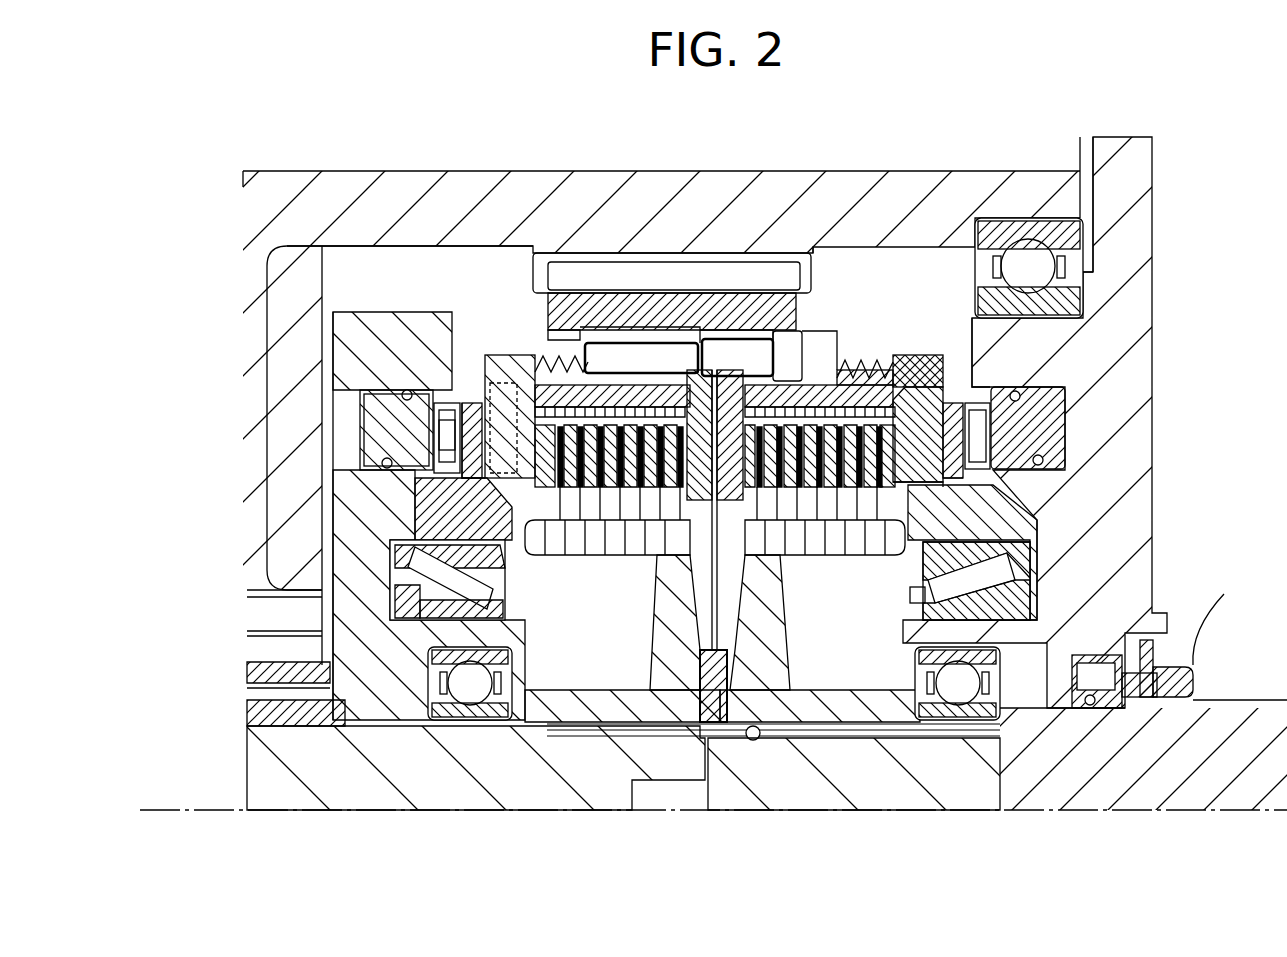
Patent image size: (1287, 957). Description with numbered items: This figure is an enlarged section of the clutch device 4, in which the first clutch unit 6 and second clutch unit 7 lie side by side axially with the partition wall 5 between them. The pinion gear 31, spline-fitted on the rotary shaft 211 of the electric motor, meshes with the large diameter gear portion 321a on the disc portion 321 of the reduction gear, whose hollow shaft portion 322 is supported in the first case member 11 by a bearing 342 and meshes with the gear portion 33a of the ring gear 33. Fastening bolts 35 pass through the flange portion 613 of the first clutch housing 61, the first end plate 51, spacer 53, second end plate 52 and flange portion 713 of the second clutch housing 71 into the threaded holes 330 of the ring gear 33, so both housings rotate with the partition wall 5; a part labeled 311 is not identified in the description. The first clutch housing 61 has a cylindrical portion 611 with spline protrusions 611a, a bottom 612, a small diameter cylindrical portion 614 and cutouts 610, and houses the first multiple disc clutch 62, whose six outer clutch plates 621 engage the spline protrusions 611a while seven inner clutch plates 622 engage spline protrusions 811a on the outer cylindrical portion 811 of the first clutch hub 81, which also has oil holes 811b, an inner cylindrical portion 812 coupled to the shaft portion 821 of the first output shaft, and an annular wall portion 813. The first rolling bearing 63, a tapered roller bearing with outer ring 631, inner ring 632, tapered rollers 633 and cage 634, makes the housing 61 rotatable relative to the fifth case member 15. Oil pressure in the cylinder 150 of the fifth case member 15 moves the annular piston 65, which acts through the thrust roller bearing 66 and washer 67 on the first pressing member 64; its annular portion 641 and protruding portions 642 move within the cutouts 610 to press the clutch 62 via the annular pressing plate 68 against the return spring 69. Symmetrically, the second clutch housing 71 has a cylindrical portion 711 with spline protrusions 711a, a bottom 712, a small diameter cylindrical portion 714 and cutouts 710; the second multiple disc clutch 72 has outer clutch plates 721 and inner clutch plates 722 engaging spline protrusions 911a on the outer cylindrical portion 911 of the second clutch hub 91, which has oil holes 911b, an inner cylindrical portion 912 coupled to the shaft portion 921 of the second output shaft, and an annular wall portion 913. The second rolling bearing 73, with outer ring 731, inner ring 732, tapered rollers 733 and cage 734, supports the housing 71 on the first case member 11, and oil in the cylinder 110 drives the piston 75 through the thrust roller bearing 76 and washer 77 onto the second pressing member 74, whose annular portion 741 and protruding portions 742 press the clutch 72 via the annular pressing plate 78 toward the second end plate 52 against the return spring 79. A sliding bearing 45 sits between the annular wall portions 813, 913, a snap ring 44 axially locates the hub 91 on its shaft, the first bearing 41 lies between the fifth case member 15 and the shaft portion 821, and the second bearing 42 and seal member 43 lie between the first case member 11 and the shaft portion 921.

The clutch device 4 is at (260, 176).
The partition wall 5 is at (698, 232).
The first clutch unit 6 is at (418, 260).
The second clutch unit 7 is at (945, 270).
The first case member 11 is at (1150, 240).
The fifth case member 15 is at (420, 370).
The cylindrical pinion gear 31 is at (263, 675).
The ring gear 33 is at (713, 217).
The gear portion 33a is at (777, 273).
The fastening bolts 35 is at (791, 340).
The first bearing 41 is at (448, 722).
The second bearing 42 is at (935, 722).
The seal member 43 is at (1185, 682).
The snap ring 44 is at (757, 741).
The sliding bearing 45 is at (715, 710).
The first end plate 51 is at (700, 345).
The second end plate 52 is at (745, 370).
The spacer 53 is at (727, 363).
The first clutch housing 61 is at (516, 520).
The first multiple disc clutch 62 is at (434, 481).
The first rolling bearing 63 is at (319, 542).
The first pressing member 64 is at (429, 284).
The annular piston 65 is at (380, 430).
The thrust roller bearing 66 is at (440, 440).
The washer 67 is at (470, 450).
The annular pressing plate 68 is at (497, 365).
The return spring 69 is at (560, 365).
The second clutch housing 71 is at (1061, 540).
The second multiple disc clutch 72 is at (979, 507).
The second rolling bearing 73 is at (1038, 720).
The second pressing member 74 is at (1119, 299).
The annular piston 75 is at (1050, 442).
The thrust roller bearing 76 is at (978, 440).
The washer 77 is at (1050, 400).
The annular pressing plate 78 is at (927, 366).
The return spring 79 is at (880, 423).
The first clutch hub 81 is at (615, 604).
The second clutch hub 91 is at (820, 604).
The cylinder 110 is at (1060, 400).
The cylinder 150 is at (420, 395).
The rotary shaft 211 is at (260, 708).
The stator plate 311 is at (632, 333).
The disc portion 321 is at (293, 603).
The large diameter gear portion 321a is at (267, 650).
The hollow shaft portion 322 is at (1083, 195).
The threaded holes 330 is at (620, 300).
The bearing 342 is at (1087, 233).
The cutouts 610 is at (350, 250).
The cylindrical portion 611 is at (556, 385).
The spline protrusions 611a is at (575, 350).
The bottom 612 is at (463, 377).
The flange portion 613 is at (667, 333).
The small diameter cylindrical portion 614 is at (447, 493).
The outer clutch plates 621 is at (572, 483).
The inner clutch plates 622 is at (618, 503).
The outer ring 631 is at (403, 562).
The inner ring 632 is at (493, 588).
The tapered rollers 633 is at (443, 577).
The cage 634 is at (425, 575).
The annular portion 641 is at (493, 352).
The protruding portions 642 is at (472, 378).
The cutouts 710 is at (930, 380).
The cylindrical portion 711 is at (813, 393).
The spline protrusions 711a is at (820, 405).
The bottom 712 is at (913, 460).
The flange portion 713 is at (860, 245).
The small diameter cylindrical portion 714 is at (913, 480).
The outer clutch plates 721 is at (837, 483).
The inner clutch plates 722 is at (806, 505).
The outer ring 731 is at (947, 560).
The inner ring 732 is at (983, 580).
The tapered rollers 733 is at (1000, 605).
The cage 734 is at (1067, 640).
The annular portion 741 is at (975, 358).
The protruding portions 742 is at (975, 380).
The outer cylindrical portion 811 is at (607, 565).
The spline protrusions 811a is at (542, 530).
The oil holes 811b is at (560, 547).
The inner cylindrical portion 812 is at (622, 690).
The annular wall portion 813 is at (697, 627).
The shaft portion 821 is at (530, 797).
The outer cylindrical portion 911 is at (810, 552).
The spline protrusions 911a is at (887, 528).
The oil holes 911b is at (875, 545).
The inner cylindrical portion 912 is at (820, 690).
The annular wall portion 913 is at (733, 627).
The shaft portion 921 is at (828, 797).